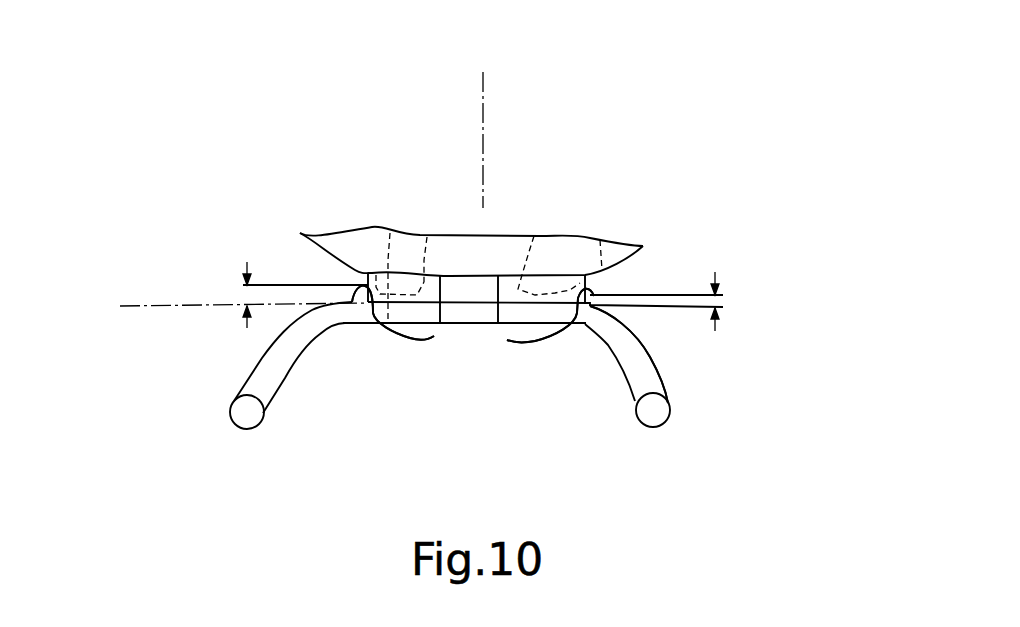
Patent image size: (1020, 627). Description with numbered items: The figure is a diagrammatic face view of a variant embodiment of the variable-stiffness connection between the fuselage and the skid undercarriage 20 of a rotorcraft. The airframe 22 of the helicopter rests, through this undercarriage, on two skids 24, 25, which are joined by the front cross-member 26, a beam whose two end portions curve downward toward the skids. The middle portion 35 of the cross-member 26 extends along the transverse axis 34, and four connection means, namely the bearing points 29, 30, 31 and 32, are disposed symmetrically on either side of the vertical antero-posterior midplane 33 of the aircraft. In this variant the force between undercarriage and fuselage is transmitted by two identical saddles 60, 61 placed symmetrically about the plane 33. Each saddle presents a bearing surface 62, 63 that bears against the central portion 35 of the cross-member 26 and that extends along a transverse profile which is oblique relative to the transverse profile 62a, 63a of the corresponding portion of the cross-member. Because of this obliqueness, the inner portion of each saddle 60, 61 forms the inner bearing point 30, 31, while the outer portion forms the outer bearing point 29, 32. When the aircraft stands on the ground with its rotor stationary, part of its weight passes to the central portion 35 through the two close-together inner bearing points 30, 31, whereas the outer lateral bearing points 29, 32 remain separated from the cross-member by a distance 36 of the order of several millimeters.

The skid undercarriage 20 is at (834, 344).
The airframe 22 is at (483, 247).
The skid 24 is at (231, 400).
The skid 25 is at (671, 400).
The front cross-member 26 is at (655, 346).
The outer lateral bearing point 29 is at (390, 233).
The inner bearing point 30 is at (427, 237).
The inner bearing point 31 is at (534, 236).
The outer lateral bearing point 32 is at (600, 240).
The antero-posterior midplane 33 is at (484, 80).
The transverse axis 34 is at (114, 305).
The central portion 35 is at (480, 325).
The distance 36 is at (247, 285).
The saddle 60 is at (428, 338).
The saddle 61 is at (500, 325).
The bearing surface 62 is at (388, 326).
The transverse profile 62a is at (370, 287).
The bearing surface 63 is at (548, 322).
The transverse profile 63a is at (596, 300).